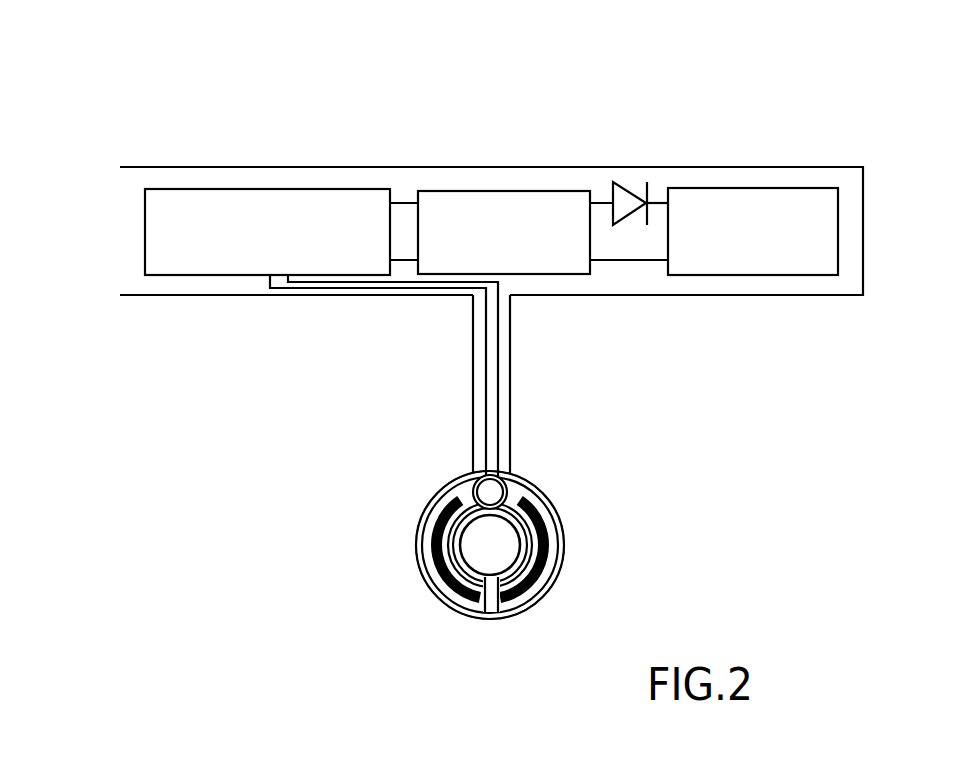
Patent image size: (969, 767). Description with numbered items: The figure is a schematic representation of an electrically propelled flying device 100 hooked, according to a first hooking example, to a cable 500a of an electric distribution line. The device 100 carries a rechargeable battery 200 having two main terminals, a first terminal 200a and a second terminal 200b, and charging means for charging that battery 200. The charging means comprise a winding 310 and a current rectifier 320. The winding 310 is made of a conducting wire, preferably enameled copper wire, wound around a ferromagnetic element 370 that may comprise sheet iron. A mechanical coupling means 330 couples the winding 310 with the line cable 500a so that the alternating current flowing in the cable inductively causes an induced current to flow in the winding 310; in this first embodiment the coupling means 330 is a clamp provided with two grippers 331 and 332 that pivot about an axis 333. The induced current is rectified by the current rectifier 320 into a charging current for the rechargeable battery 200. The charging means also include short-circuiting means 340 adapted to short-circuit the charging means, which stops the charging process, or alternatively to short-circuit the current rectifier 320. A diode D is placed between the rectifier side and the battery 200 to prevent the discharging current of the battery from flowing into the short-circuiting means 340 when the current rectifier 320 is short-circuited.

The electrically propelled flying device 100 is at (146, 64).
The current rectifier 320 is at (209, 197).
The short-circuiting means 340 is at (505, 200).
The diode D is at (626, 200).
The rechargeable battery 200 is at (765, 200).
The first terminal 200a is at (657, 200).
The second terminal 200b is at (630, 261).
The coupling means 330 is at (450, 482).
The gripper 331 is at (420, 527).
The gripper 332 is at (563, 512).
The axis 333 is at (519, 477).
The winding 310 is at (432, 565).
The ferromagnetic element 370 is at (455, 602).
The cable 500a is at (513, 546).